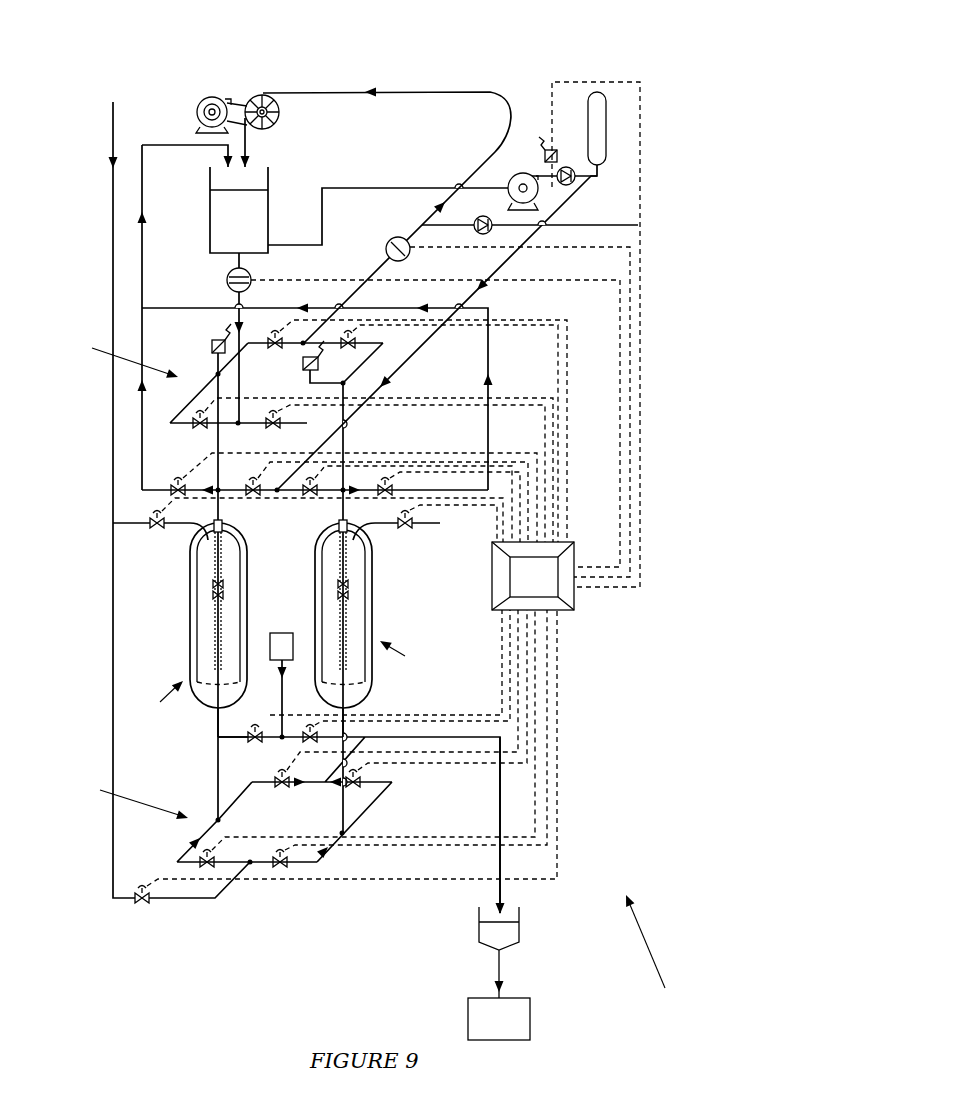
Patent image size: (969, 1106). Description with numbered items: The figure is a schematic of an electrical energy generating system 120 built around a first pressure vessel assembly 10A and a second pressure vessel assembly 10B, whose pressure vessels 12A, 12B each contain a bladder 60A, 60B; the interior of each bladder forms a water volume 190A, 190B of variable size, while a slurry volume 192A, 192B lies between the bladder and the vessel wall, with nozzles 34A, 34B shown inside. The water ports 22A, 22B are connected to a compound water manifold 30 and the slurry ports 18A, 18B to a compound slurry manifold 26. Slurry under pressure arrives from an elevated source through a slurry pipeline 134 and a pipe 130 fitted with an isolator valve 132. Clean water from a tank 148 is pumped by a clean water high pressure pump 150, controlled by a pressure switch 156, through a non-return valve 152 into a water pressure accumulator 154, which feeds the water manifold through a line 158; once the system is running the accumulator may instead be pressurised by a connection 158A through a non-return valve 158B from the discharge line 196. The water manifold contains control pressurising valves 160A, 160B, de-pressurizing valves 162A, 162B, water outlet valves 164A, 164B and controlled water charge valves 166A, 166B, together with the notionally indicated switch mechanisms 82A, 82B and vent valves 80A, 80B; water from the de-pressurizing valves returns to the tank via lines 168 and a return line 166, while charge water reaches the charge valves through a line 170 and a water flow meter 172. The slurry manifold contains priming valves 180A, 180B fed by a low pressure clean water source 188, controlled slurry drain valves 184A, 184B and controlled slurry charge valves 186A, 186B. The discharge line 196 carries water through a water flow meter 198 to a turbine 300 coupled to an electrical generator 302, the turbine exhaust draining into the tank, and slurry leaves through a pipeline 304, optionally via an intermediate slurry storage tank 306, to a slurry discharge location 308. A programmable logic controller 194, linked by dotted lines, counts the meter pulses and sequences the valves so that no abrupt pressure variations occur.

The first pressure vessel assembly 10A is at (152, 698).
The second pressure vessel assembly 10B is at (416, 657).
The first vessel 12A is at (190, 645).
The second vessel 12B is at (373, 622).
The slurry port 18A is at (218, 738).
The slurry port 18B is at (350, 712).
The water port 22A is at (210, 532).
The water port 22B is at (350, 532).
The compound slurry manifold 26 is at (124, 801).
The compound water manifold 30 is at (118, 359).
The first nozzle 34A is at (225, 588).
The second nozzle 34B is at (338, 593).
The bladder 60A is at (197, 606).
The bladder 60B is at (366, 590).
The vent valve 80A is at (150, 525).
The vent valve 80B is at (414, 522).
The switch mechanism 82A is at (212, 350).
The switch mechanism 82B is at (320, 365).
The electrical energy generating system 120 is at (657, 958).
The pipe 130 is at (225, 890).
The isolator valve 132 is at (142, 905).
The slurry pipeline 134 is at (113, 863).
The tank 148 is at (268, 202).
The clean water high pressure pump 150 is at (510, 178).
The non-return valve 152 is at (567, 165).
The water pressure accumulator 154 is at (602, 125).
The pressure switch 156 is at (543, 140).
The line 158 is at (590, 184).
The connection 158A is at (545, 222).
The non-return valve 158B is at (492, 232).
The control pressurising valve 160A is at (255, 498).
The control pressurising valve 160B is at (310, 498).
The de-pressurizing valve 162A is at (170, 493).
The de-pressurizing valve 162B is at (388, 478).
The water outlet valve 164A is at (275, 352).
The water outlet valve 164B is at (383, 343).
The return line 166 is at (143, 203).
The controlled water charge valve 166A is at (200, 430).
The controlled water charge valve 166B is at (273, 430).
The lines 168 is at (174, 306).
The line 170 is at (243, 300).
The water flow meter 172 is at (253, 274).
The priming valve 180A is at (255, 744).
The priming valve 180B is at (322, 740).
The controlled slurry drain valve 184A is at (282, 790).
The controlled slurry drain valve 184B is at (390, 786).
The controlled slurry charge valve 186A is at (207, 870).
The controlled slurry charge valve 186B is at (283, 870).
The low pressure clean water source 188 is at (274, 650).
The water volume 190A is at (212, 585).
The water volume 190B is at (352, 567).
The slurry volume 192A is at (205, 708).
The slurry volume 192B is at (365, 700).
The programmable logic controller 194 is at (574, 610).
The discharge line 196 is at (472, 174).
The water flow meter 198 is at (387, 240).
The turbine 300 is at (255, 95).
The electrical generator 302 is at (205, 95).
The pipeline 304 is at (500, 805).
The intermediate slurry storage tank 306 is at (519, 930).
The slurry discharge location 308 is at (530, 1012).